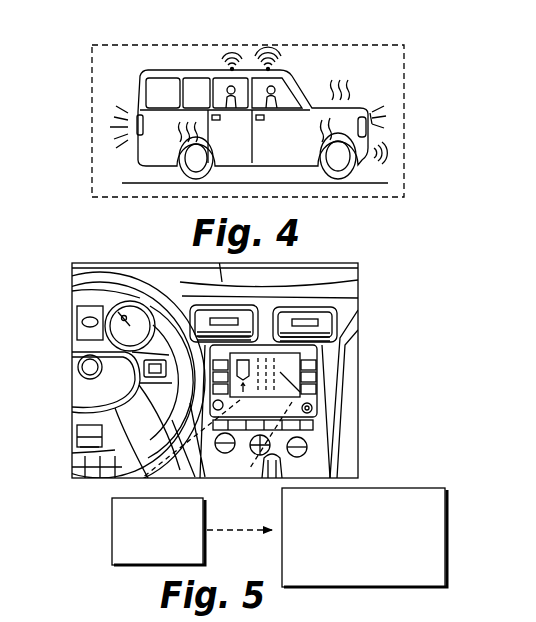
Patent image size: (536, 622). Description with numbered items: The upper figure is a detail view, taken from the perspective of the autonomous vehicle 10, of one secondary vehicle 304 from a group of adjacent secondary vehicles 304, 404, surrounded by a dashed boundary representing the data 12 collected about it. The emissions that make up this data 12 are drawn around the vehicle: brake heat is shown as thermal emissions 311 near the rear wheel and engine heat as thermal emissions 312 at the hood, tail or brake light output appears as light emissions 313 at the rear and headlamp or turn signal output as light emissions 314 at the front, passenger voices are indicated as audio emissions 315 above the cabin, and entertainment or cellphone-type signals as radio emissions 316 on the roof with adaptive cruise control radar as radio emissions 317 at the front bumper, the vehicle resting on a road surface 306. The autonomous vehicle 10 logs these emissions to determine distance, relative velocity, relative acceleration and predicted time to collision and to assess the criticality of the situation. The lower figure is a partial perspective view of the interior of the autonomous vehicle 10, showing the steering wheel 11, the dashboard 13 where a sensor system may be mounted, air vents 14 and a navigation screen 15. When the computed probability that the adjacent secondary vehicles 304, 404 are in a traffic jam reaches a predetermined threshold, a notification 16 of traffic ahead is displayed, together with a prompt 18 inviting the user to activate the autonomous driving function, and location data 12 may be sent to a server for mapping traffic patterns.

In FIG. 4, the secondary vehicle 304 is at (83, 65).
In FIG. 4, the data 12 is at (137, 43).
In FIG. 5, the data 12 is at (140, 621).
In FIG. 4, the road surface 306 is at (118, 181).
In FIG. 4, the thermal emissions 311 is at (173, 134).
In FIG. 4, the light emissions 313 is at (99, 128).
In FIG. 4, the audio emissions 315 is at (232, 43).
In FIG. 4, the radio emissions 316 is at (281, 42).
In FIG. 4, the thermal emissions 312 is at (354, 93).
In FIG. 4, the light emissions 314 is at (394, 112).
In FIG. 4, the radio emissions 317 is at (396, 155).
In FIG. 5, the autonomous vehicle 10 is at (59, 269).
In FIG. 5, the steering wheel 11 is at (79, 372).
In FIG. 5, the dashboard 13 is at (290, 296).
In FIG. 5, the air vent 14 is at (339, 339).
In FIG. 5, the display screen 15 is at (289, 382).
In FIG. 5, the notification 16 is at (110, 530).
In FIG. 5, the prompt 18 is at (282, 514).
In FIG. 5, the secondary vehicle 404 is at (105, 621).